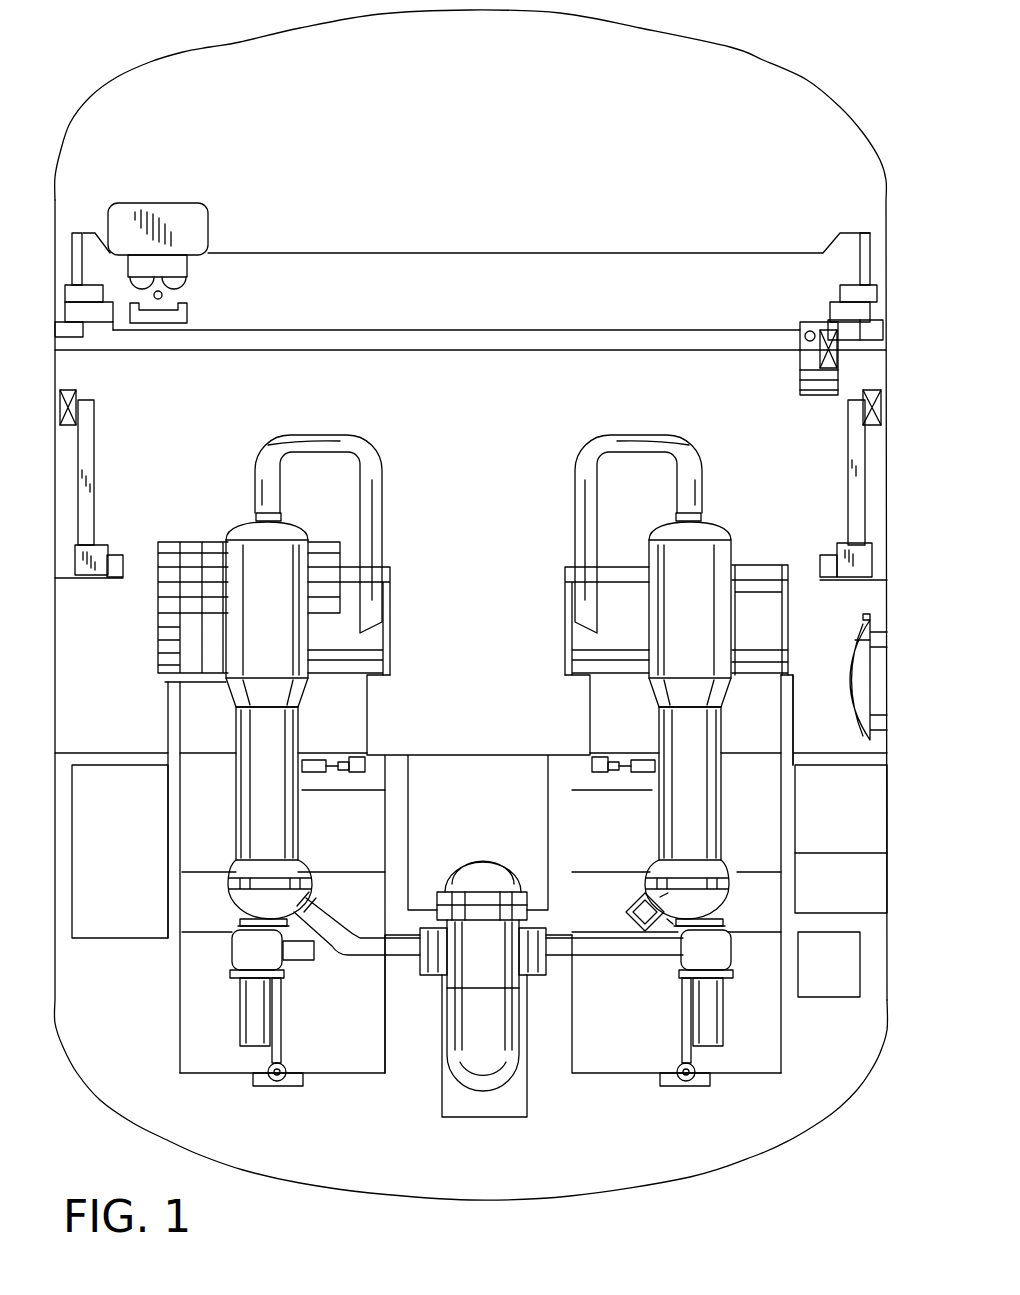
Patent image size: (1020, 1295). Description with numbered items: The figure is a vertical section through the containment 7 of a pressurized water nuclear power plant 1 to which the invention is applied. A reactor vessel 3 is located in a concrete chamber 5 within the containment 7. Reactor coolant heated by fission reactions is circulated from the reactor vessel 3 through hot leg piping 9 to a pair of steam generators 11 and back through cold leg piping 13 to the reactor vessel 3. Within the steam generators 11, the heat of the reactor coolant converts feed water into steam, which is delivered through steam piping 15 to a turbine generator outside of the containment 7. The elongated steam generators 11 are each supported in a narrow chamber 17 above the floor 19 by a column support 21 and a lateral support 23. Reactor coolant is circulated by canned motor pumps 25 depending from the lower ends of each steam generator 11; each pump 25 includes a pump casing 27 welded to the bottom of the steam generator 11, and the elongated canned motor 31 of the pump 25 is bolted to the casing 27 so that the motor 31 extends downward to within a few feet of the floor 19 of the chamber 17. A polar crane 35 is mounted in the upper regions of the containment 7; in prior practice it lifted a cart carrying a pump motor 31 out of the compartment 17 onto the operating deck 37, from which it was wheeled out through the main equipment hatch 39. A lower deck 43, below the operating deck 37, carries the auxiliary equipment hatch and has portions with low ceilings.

The nuclear power plant 1 is at (830, 51).
The reactor vessel 3 is at (497, 1057).
The concrete chamber 5 is at (525, 1098).
The containment 7 is at (806, 80).
The hot leg piping 9 is at (343, 946).
The steam generators 11 is at (287, 730).
The cold leg piping 13 is at (300, 957).
The steam piping 15 is at (372, 530).
The narrow chamber 17 is at (186, 738).
The floor 19 is at (215, 1073).
The column support 21 is at (284, 1022).
The lateral support 23 is at (313, 777).
The canned motor pumps 25 is at (236, 997).
The pump casing 27 is at (253, 950).
The canned motor 31 is at (255, 1027).
The polar crane 35 is at (190, 312).
The operating deck 37 is at (812, 748).
The main equipment hatch 39 is at (850, 657).
The deck 43 is at (813, 913).